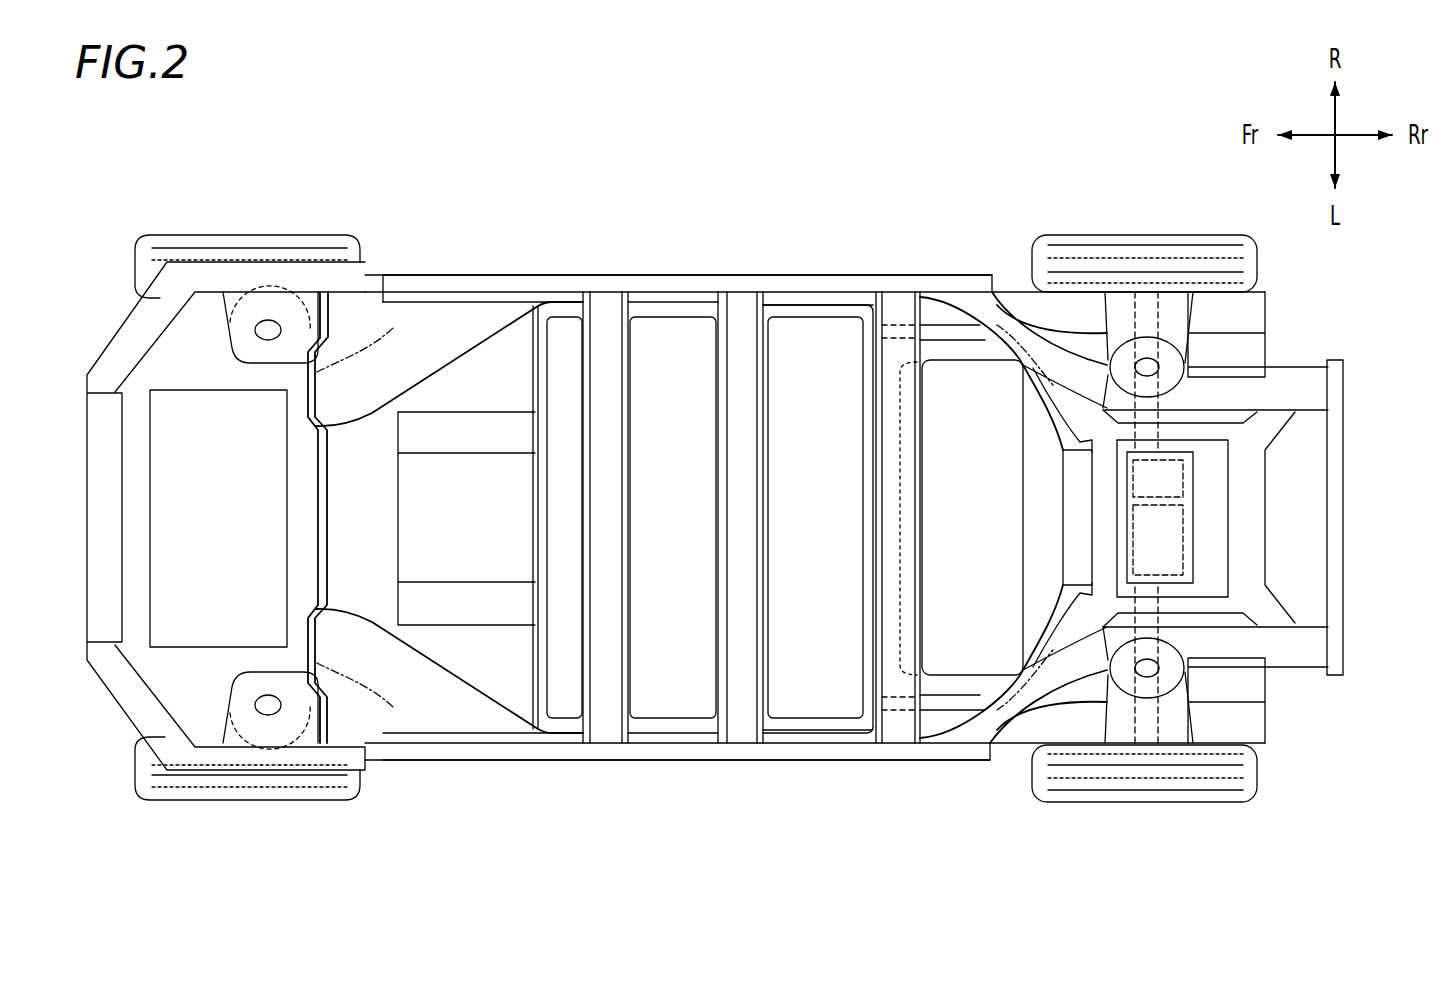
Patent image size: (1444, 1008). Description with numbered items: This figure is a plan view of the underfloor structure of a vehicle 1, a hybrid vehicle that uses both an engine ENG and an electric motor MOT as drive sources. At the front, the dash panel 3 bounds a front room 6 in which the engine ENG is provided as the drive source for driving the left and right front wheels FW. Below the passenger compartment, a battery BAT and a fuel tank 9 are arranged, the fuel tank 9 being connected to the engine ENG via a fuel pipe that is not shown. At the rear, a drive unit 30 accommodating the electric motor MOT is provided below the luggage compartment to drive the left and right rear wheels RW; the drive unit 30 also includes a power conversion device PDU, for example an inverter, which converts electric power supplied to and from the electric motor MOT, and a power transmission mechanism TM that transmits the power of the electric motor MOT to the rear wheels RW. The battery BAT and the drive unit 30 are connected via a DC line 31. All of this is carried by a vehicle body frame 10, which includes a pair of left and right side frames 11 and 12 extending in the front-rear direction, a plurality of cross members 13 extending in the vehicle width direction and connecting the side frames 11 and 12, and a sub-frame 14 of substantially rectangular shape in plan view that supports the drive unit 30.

The vehicle 1 is at (728, 234).
The dash panel 3 is at (393, 328).
The front room 6 is at (184, 690).
The fuel tank 9 is at (990, 668).
The vehicle body frame 10 is at (857, 276).
The side frame 11 is at (788, 274).
The side frame 12 is at (822, 762).
The cross member 13 is at (365, 447).
The sub-frame 14 is at (1207, 413).
The drive unit 30 is at (1210, 490).
The DC line 31 is at (947, 320).
The engine ENG is at (222, 388).
The front wheel FW is at (280, 232).
The rear wheel RW is at (1185, 233).
The battery BAT is at (568, 408).
The power conversion device PDU is at (1078, 590).
The power transmission mechanism TM is at (1180, 478).
The electric motor MOT is at (1170, 540).